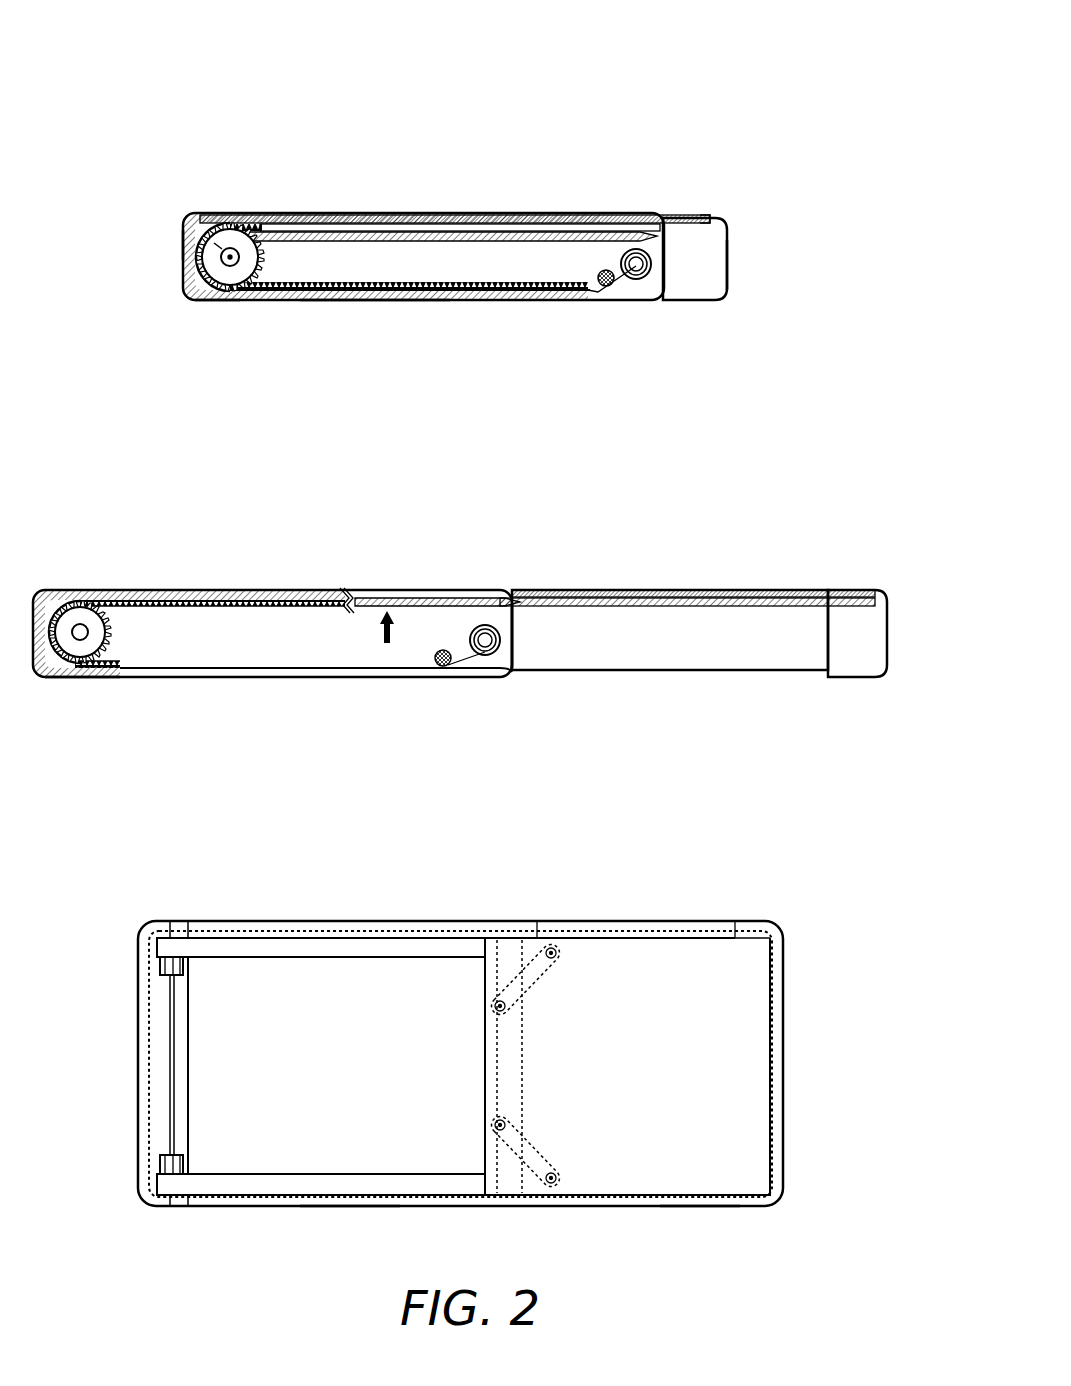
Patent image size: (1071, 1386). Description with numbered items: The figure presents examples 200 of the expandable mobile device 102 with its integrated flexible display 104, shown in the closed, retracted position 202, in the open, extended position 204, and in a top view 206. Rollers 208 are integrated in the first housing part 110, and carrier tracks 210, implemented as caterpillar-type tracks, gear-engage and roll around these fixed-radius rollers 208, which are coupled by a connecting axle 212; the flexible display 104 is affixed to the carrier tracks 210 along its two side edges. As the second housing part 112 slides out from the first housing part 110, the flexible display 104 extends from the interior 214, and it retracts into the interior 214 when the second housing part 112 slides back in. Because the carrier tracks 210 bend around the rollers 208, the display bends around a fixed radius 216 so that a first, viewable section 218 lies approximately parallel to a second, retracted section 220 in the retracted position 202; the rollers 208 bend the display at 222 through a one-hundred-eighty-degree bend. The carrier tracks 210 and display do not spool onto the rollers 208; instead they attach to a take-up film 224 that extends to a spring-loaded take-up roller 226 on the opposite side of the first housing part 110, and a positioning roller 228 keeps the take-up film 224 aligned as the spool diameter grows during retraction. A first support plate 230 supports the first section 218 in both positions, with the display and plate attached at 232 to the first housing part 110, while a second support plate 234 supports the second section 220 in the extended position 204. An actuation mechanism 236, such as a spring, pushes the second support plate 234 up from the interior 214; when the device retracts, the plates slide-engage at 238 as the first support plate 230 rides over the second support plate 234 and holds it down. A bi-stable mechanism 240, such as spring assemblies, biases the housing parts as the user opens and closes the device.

The examples of the expandable mobile device 200 is at (627, 58).
The closed, retracted position 202 is at (657, 150).
The open, extended position 204 is at (752, 525).
The top view 206 is at (752, 868).
The expandable mobile device 102 is at (348, 465).
The flexible display 104 is at (465, 214).
The first housing part 110 is at (218, 298).
The second housing part 112 is at (690, 300).
The rollers 208 is at (235, 243).
The carrier tracks 210 is at (215, 222).
The connecting axle 212 is at (175, 1050).
The interior 214 is at (362, 260).
The fixed radius 216 is at (212, 278).
The first, viewable section 218 is at (400, 212).
The second, retracted section 220 is at (400, 298).
The bend location 222 is at (186, 232).
The take-up film 224 is at (320, 672).
The take-up roller 226 is at (637, 267).
The positioning roller 228 is at (612, 283).
The first support plate 230 is at (726, 296).
The attachment location 232 is at (715, 213).
The second support plate 234 is at (478, 240).
The actuation mechanism 236 is at (367, 634).
The slide-engagement location 238 is at (518, 617).
The bi-stable mechanism 240 is at (540, 978).